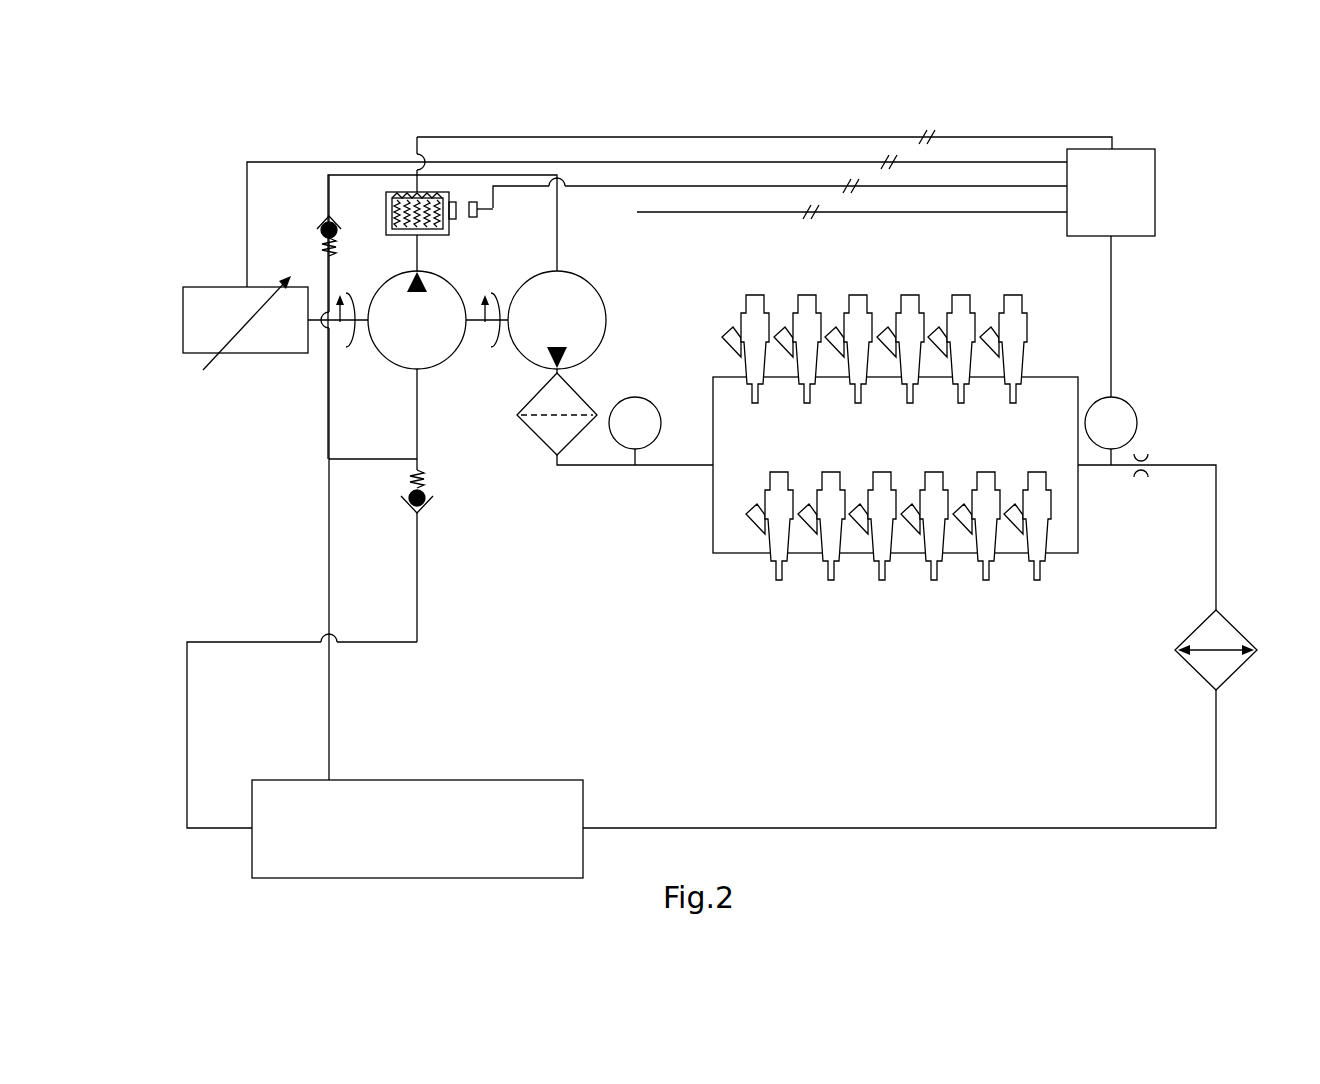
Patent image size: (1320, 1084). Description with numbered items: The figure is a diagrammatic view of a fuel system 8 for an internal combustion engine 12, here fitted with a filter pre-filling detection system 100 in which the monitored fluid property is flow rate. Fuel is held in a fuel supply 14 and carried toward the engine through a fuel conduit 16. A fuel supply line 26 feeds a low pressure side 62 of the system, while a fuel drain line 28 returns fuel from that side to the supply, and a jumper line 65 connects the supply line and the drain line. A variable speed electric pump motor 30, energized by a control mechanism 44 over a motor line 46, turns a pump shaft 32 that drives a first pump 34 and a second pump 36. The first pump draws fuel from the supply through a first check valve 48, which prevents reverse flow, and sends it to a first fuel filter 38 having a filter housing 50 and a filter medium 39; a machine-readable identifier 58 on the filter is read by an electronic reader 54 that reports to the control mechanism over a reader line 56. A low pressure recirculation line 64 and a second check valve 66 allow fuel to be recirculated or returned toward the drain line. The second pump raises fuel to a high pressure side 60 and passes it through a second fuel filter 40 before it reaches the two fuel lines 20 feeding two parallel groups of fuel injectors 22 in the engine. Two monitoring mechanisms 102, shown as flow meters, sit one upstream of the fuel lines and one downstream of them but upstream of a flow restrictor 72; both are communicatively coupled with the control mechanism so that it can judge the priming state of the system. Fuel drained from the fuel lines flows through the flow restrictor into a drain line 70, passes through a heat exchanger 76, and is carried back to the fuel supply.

The fuel system 8 is at (974, 125).
The internal combustion engine 12 is at (1056, 358).
The fuel supply 14 is at (534, 778).
The fuel conduit 16 is at (692, 478).
The fuel line 20 is at (980, 380).
The fuel injectors 22 is at (807, 294).
The fuel supply line 26 is at (186, 747).
The fuel drain line 28 is at (328, 562).
The pump motor 30 is at (238, 354).
The pump shaft 32 is at (503, 332).
The first pump 34 is at (380, 356).
The second pump 36 is at (591, 276).
The first fuel filter 38 is at (383, 212).
The filter medium 39 is at (406, 235).
The second fuel filter 40 is at (589, 405).
The control mechanism 44 is at (1156, 190).
The motor line 46 is at (708, 162).
The first check valve 48 is at (428, 500).
The filter housing 50 is at (386, 234).
The electronic reader 54 is at (478, 212).
The reader line 56 is at (612, 190).
The machine-readable identifier 58 is at (452, 222).
The high pressure side 60 is at (608, 360).
The low pressure side 62 is at (445, 387).
The low pressure recirculation line 64 is at (328, 182).
The jumper line 65 is at (370, 458).
The second check valve 66 is at (318, 230).
The drain line 70 is at (1217, 540).
The flow restrictor 72 is at (1144, 460).
The heat exchanger 76 is at (1250, 644).
The detection system 100 is at (1168, 328).
The monitoring mechanisms 102 is at (660, 410).